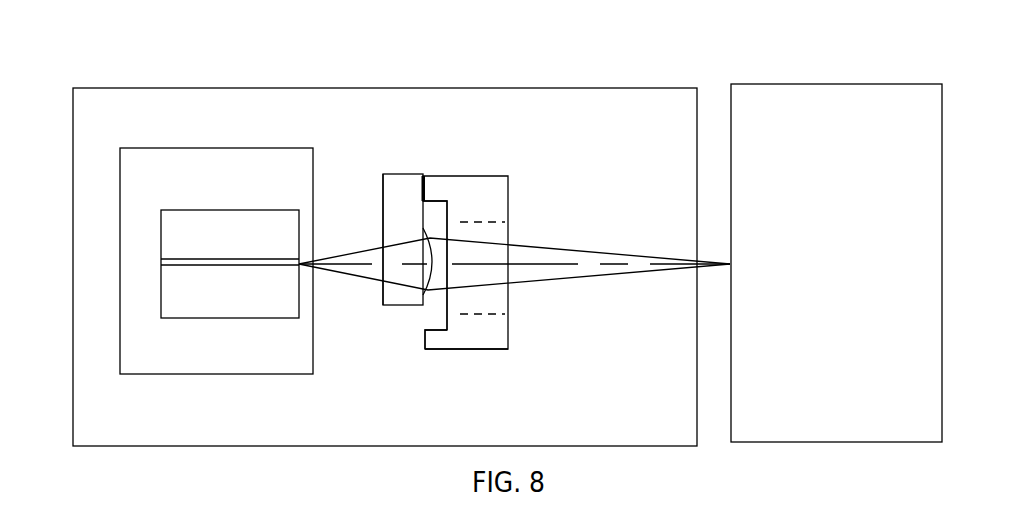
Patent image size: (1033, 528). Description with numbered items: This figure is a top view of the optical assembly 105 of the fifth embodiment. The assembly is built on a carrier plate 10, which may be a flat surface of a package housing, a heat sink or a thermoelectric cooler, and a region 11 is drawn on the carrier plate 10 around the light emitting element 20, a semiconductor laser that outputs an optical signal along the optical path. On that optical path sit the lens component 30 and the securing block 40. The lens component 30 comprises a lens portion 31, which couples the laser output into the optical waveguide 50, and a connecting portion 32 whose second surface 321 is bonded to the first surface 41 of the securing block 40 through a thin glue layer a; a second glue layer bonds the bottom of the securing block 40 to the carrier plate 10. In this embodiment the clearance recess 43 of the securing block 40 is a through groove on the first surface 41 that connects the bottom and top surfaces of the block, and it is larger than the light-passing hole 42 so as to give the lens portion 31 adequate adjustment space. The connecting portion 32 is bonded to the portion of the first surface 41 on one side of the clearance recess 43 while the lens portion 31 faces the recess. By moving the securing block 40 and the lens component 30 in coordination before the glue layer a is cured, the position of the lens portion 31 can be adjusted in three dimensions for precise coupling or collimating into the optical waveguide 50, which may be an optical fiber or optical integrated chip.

The optical assembly 105 is at (66, 42).
The carrier plate 10 is at (336, 103).
The substrate 11 is at (172, 158).
The light emitting element 20 is at (263, 221).
The lens component 30 is at (398, 173).
The lens portion 31 is at (394, 273).
The connecting portion 32 is at (392, 188).
The second surface 321 is at (425, 208).
The glue layer a is at (423, 188).
The securing block 40 is at (488, 184).
The first surface 41 is at (426, 332).
The light-passing hole 42 is at (503, 232).
The clearance recess 43 is at (439, 331).
The optical waveguide 50 is at (765, 107).